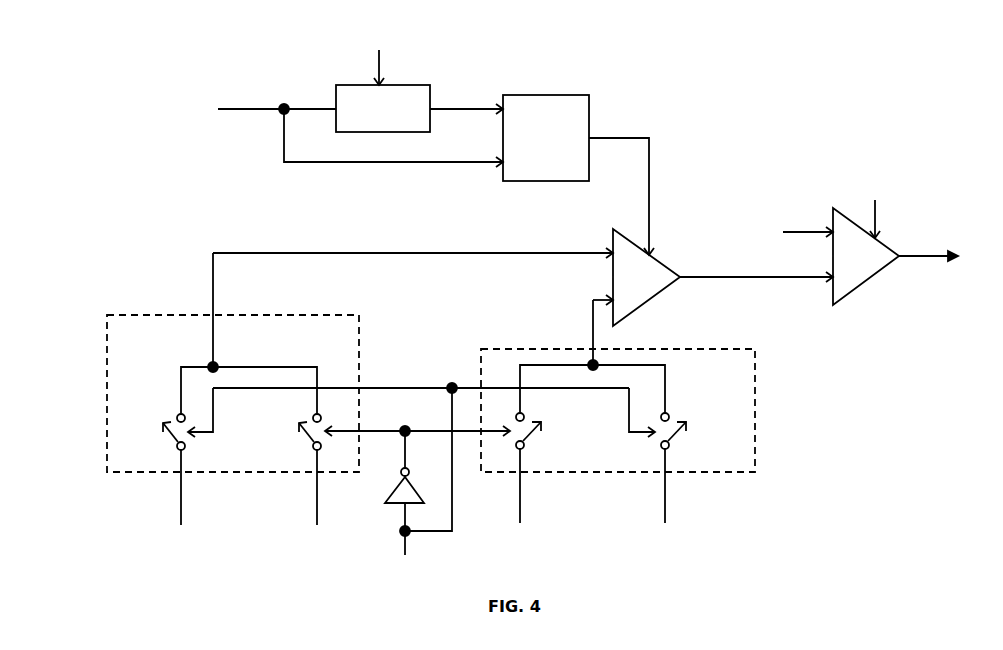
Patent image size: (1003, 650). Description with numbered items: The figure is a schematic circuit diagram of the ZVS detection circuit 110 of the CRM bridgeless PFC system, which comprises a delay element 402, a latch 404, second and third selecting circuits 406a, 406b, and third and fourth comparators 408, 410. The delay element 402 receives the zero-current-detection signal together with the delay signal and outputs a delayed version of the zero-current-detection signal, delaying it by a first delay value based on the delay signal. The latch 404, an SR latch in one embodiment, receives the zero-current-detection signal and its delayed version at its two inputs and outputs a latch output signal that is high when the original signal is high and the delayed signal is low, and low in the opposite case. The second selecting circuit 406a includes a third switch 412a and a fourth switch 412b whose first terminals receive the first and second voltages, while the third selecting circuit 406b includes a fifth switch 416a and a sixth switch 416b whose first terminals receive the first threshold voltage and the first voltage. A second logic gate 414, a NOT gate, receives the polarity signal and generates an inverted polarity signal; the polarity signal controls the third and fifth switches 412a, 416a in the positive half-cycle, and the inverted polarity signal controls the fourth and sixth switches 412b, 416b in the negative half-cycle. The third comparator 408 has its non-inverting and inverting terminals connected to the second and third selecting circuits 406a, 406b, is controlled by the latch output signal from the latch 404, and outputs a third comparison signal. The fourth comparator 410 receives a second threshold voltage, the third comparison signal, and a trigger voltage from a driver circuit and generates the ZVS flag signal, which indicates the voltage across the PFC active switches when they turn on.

The ZVS detection circuit 110 is at (188, 44).
The delay element 402 is at (398, 85).
The latch 404 is at (562, 95).
The second selecting circuit 406a is at (105, 395).
The third selecting circuit 406b is at (482, 357).
The third comparator 408 is at (662, 264).
The fourth comparator 410 is at (853, 290).
The third switch 412a is at (175, 438).
The fourth switch 412b is at (311, 438).
The second logic gate 414 is at (395, 503).
The fifth switch 416a is at (680, 438).
The sixth switch 416b is at (535, 438).